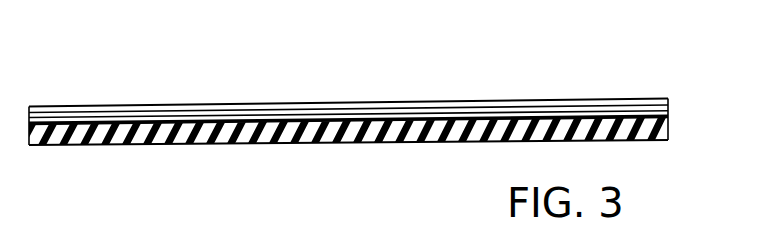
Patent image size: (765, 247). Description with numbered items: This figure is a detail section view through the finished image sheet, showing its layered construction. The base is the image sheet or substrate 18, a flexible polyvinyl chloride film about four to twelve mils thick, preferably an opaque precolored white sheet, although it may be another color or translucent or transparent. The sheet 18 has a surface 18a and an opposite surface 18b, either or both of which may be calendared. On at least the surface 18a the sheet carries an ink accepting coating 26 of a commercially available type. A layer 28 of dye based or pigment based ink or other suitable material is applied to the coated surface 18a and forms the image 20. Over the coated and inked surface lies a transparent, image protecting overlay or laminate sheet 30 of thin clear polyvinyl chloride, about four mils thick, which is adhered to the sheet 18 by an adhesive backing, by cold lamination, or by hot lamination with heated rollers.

The image sheet 18 is at (352, 122).
The coated surface 18a is at (283, 126).
The opposite surface 18b is at (215, 145).
The image 20 is at (348, 89).
The ink accepting coating 26 is at (573, 118).
The image layer 28 is at (510, 113).
The laminate sheet 30 is at (120, 105).